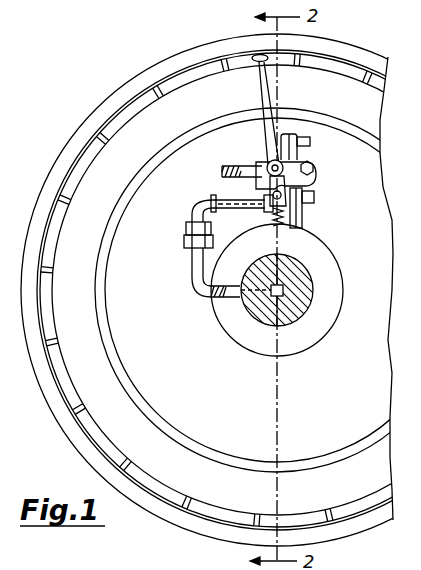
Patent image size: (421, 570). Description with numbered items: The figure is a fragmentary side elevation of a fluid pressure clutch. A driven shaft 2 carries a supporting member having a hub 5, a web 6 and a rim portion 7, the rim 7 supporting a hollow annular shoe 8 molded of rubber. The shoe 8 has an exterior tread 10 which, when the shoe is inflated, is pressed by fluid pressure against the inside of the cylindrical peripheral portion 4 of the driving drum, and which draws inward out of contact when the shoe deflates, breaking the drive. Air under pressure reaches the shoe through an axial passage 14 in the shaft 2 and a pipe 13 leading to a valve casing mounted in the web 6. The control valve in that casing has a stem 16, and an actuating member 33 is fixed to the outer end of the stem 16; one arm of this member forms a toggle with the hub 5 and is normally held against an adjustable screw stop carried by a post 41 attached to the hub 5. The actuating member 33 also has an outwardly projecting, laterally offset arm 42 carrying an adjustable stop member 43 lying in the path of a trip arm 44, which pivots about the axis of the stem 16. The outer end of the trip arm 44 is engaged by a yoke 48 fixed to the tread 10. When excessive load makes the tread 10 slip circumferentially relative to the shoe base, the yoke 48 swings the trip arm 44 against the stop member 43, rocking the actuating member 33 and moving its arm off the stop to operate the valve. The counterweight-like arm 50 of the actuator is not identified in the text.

The driven shaft 2 is at (252, 307).
The cylindrical peripheral portion 4 is at (72, 140).
The hub 5 is at (343, 280).
The web 6 is at (167, 338).
The rim portion 7 is at (192, 443).
The hollow annular shoe 8 is at (137, 415).
The tread 10 is at (128, 108).
The pipe 13 is at (190, 260).
The axial passage 14 is at (283, 297).
The stem 16 is at (268, 165).
The actuating member 33 is at (245, 191).
The post 41 is at (302, 216).
The laterally offset arm 42 is at (310, 144).
The adjustable stop member 43 is at (300, 140).
The trip arm 44 is at (268, 101).
The yoke 48 is at (257, 55).
The counterweight arm 50 is at (222, 171).